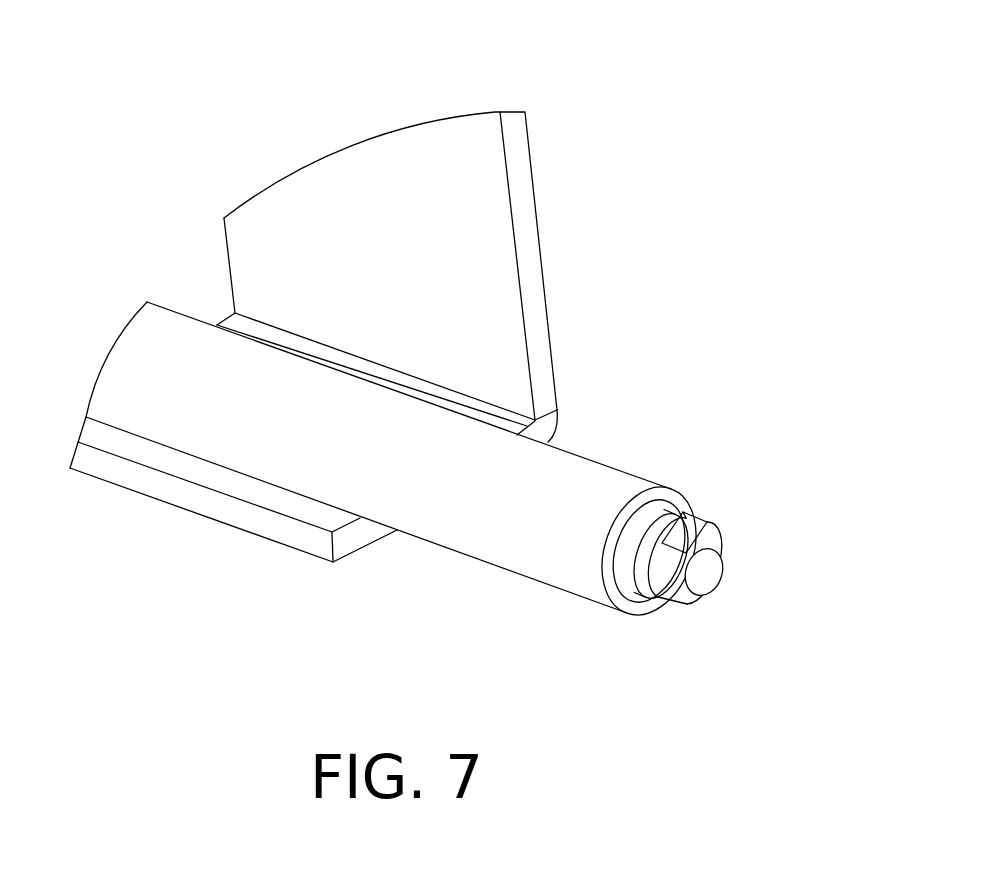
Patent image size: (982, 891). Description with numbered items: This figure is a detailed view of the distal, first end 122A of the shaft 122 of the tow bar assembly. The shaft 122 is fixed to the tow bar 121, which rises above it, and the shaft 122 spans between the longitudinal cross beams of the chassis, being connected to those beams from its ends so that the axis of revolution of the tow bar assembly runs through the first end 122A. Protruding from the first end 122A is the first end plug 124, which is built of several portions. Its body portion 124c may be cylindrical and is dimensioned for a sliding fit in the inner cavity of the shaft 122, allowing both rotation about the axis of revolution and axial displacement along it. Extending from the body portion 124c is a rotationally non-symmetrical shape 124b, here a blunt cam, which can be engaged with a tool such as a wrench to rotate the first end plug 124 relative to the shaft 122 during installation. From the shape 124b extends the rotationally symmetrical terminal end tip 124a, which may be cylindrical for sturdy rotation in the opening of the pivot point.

The tow bar 121 is at (342, 178).
The shaft 122 is at (183, 343).
The first end of the shaft 122A is at (700, 493).
The first end plug 124 is at (716, 621).
The terminal end tip 124a is at (707, 568).
The rotationally non-symmetrical shape 124b is at (705, 528).
The body portion 124c is at (650, 517).